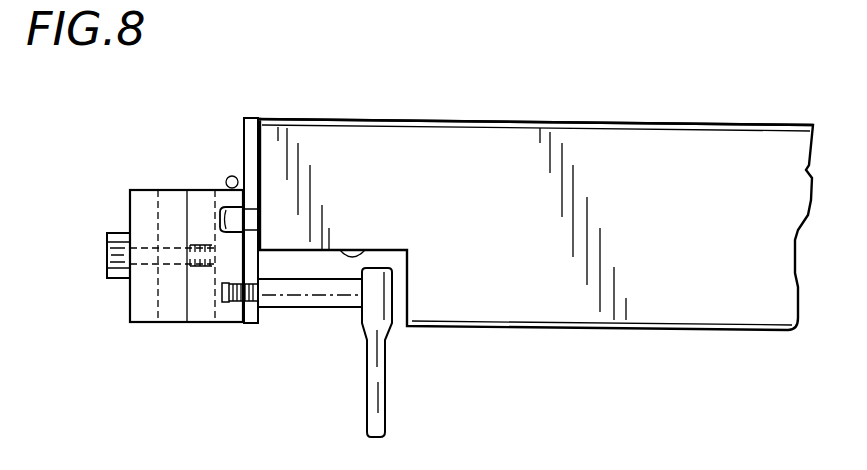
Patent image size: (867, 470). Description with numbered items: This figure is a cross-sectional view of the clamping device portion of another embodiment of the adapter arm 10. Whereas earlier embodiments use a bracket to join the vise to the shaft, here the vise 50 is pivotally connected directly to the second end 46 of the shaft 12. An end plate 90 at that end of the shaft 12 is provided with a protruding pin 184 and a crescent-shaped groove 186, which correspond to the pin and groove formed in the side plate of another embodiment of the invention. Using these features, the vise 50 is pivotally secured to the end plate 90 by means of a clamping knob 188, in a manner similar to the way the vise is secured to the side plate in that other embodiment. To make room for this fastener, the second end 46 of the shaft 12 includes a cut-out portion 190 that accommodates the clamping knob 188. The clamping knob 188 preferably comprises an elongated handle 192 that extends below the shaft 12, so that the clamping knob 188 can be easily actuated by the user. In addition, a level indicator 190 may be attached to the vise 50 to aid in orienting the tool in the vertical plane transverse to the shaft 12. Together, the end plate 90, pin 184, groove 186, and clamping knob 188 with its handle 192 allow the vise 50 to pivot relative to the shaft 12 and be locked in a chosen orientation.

The adapter arm 10 is at (560, 112).
The shaft 12 is at (691, 121).
The second end of shaft 46 is at (382, 114).
The vise 50 is at (169, 335).
The end plate 90 is at (243, 118).
The protruding pin 184 is at (222, 216).
The crescent-shaped groove 186 is at (233, 323).
The clamping knob 188 is at (319, 323).
The cut-out portion 190 is at (229, 176).
The elongated handle 192 is at (384, 368).